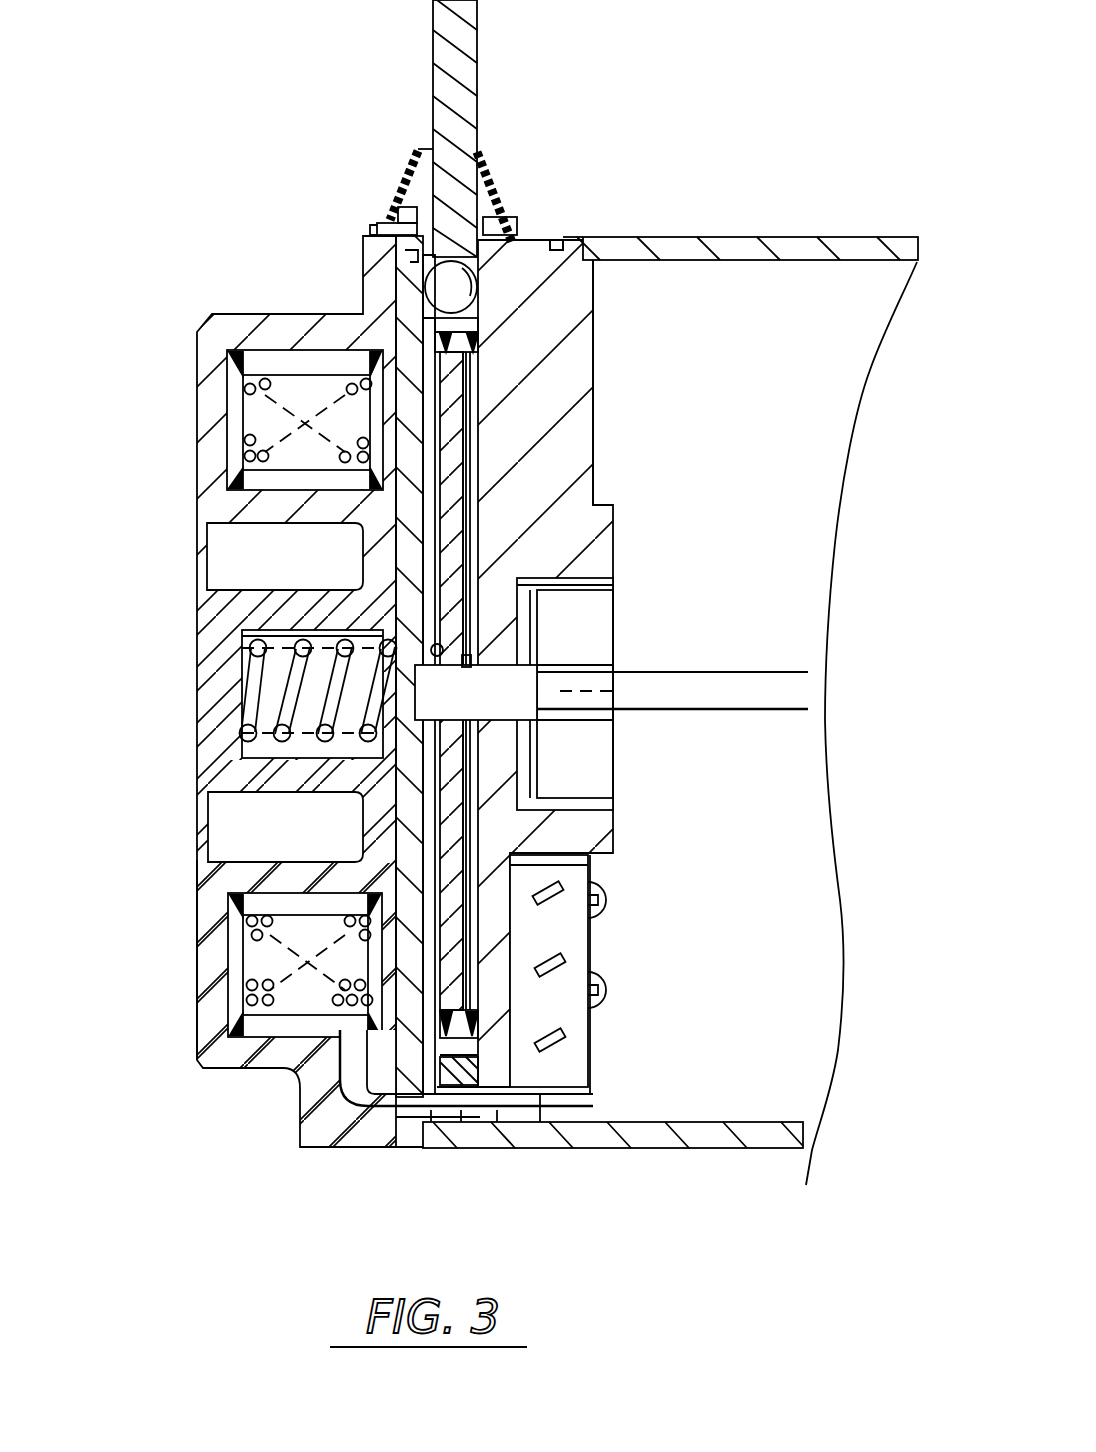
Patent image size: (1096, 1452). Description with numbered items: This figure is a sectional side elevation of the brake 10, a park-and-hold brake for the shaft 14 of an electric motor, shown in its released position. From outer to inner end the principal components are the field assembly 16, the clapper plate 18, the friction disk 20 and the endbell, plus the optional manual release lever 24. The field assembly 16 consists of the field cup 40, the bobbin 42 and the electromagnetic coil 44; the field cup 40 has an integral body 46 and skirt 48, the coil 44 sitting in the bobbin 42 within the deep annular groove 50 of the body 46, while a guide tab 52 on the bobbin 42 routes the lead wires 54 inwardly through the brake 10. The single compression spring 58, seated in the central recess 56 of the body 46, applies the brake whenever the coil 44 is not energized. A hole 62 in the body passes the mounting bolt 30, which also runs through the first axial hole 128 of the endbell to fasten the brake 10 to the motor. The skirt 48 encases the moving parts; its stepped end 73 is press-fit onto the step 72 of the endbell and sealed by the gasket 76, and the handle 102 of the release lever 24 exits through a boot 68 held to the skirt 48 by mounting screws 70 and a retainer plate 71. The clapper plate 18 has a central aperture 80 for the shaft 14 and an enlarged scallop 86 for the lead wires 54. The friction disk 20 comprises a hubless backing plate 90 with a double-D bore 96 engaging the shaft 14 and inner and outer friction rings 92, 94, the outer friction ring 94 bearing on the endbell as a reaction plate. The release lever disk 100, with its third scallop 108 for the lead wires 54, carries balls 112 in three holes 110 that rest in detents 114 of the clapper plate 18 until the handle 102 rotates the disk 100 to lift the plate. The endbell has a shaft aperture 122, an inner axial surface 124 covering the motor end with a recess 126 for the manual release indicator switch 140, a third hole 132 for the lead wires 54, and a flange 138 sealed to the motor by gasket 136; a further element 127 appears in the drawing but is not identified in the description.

The brake 10 is at (592, 83).
The shaft 14 is at (476, 692).
The field assembly 16 is at (194, 961).
The clapper plate 18 is at (394, 525).
The friction disk 20 is at (591, 602).
The manual release lever 24 is at (480, 1073).
The mounting bolt 30 is at (790, 672).
The field cup 40 is at (240, 965).
The bobbin 42 is at (229, 949).
The electromagnetic coil 44 is at (236, 441).
The body 46 is at (200, 890).
The skirt 48 is at (375, 1150).
The annular groove 50 is at (254, 380).
The guide tab 52 is at (395, 1090).
The lead wires 54 is at (541, 1124).
The recess 56 is at (257, 702).
The compression spring 58 is at (255, 649).
The hole 62 is at (362, 775).
The boot 68 is at (487, 160).
The mounting screws 70 is at (388, 216).
The retainer plate 71 is at (381, 228).
The step 72 is at (522, 1150).
The stepped end 73 is at (490, 1150).
The gasket 76 is at (517, 1145).
The central aperture 80 is at (437, 645).
The enlarged scallop 86 is at (405, 1118).
The backing plate 90 is at (455, 445).
The inner friction ring 92 is at (440, 378).
The outer friction ring 94 is at (470, 345).
The bore 96 is at (475, 665).
The disk 100 is at (500, 333).
The handle 102 is at (482, 62).
The third scallop 108 is at (433, 1120).
The holes 110 is at (483, 291).
The balls 112 is at (430, 290).
The detents 114 is at (360, 260).
The aperture 122 is at (553, 580).
The inner axial surface 124 is at (595, 336).
The recess 126 is at (565, 1074).
The top wall 127 is at (799, 235).
The first axial hole 128 is at (566, 681).
The third hole 132 is at (462, 1120).
The gasket 136 is at (556, 240).
The flange 138 is at (565, 236).
The manual release indicator switch 140 is at (592, 947).